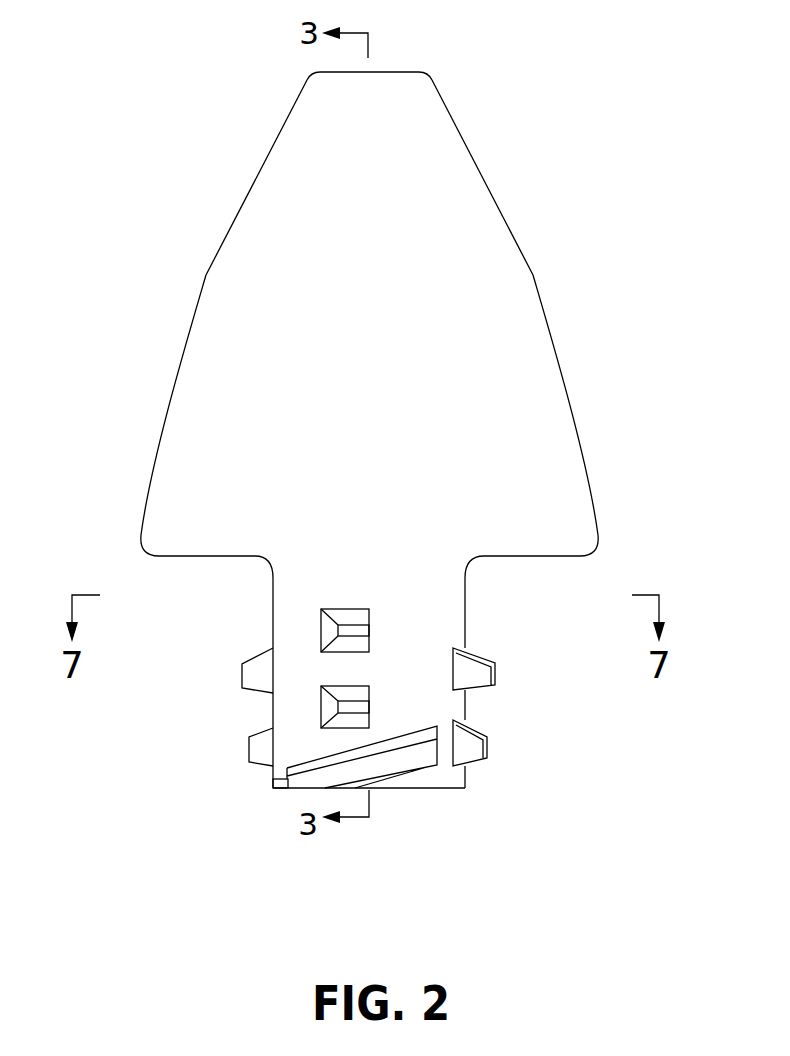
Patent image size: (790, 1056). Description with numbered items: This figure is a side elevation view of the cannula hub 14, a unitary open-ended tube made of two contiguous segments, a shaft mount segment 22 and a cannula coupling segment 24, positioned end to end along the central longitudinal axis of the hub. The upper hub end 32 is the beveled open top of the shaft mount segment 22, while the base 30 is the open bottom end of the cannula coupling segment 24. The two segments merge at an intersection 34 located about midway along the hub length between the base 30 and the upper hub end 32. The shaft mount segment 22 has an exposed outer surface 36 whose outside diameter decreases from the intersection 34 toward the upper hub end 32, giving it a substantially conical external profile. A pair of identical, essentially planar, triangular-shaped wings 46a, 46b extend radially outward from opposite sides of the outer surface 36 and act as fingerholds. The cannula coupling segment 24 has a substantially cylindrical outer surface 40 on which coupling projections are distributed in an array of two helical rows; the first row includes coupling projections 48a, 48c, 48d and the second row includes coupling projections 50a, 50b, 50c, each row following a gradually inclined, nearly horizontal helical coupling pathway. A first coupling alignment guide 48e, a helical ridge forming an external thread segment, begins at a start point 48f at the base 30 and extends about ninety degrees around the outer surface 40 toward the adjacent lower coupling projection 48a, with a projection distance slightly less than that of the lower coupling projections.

The cannula hub 14 is at (584, 259).
The shaft mount segment 22 is at (395, 157).
The cannula coupling segment 24 is at (430, 588).
The base 30 is at (447, 790).
The upper hub end 32 is at (400, 72).
The intersection 34 is at (265, 565).
The outer surface 36 is at (392, 222).
The outer surface 40 is at (433, 632).
The first wing 46a is at (556, 348).
The second wing 46b is at (273, 132).
The first row coupling projection 48a is at (487, 747).
The first row coupling projection 48c is at (242, 672).
The first row coupling projection 48d is at (346, 608).
The first coupling alignment guide 48e is at (390, 762).
The first start point 48f is at (287, 778).
The second row coupling projection 50a is at (249, 748).
The second row coupling projection 50b is at (345, 686).
The second row coupling projection 50c is at (495, 675).